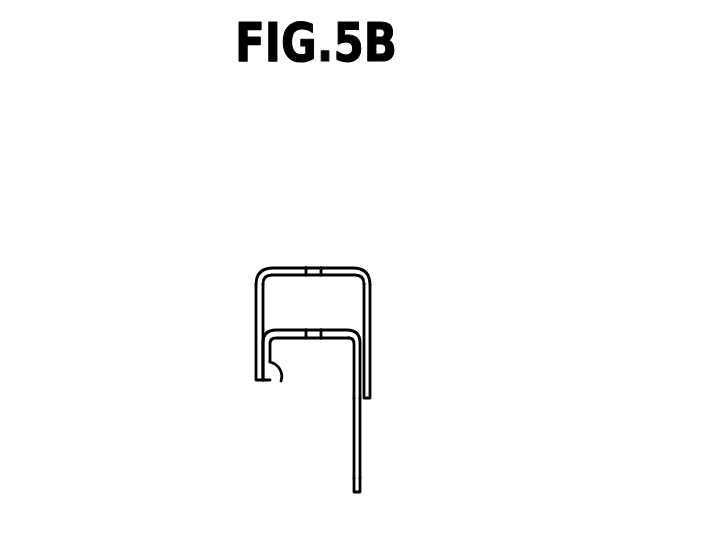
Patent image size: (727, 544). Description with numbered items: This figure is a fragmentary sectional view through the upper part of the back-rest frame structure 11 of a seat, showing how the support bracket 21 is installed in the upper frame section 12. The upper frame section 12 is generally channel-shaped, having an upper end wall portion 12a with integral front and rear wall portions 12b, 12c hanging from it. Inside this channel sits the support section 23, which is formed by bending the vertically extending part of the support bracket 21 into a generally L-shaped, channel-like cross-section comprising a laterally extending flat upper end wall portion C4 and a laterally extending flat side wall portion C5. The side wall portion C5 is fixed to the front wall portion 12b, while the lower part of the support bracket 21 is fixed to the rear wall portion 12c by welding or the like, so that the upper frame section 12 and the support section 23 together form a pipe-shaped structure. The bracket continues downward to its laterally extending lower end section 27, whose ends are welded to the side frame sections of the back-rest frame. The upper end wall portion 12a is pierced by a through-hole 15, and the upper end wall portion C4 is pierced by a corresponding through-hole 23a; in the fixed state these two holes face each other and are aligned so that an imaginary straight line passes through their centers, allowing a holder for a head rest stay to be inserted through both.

The back-rest frame structure 11 is at (263, 257).
The upper frame section 12 is at (332, 268).
The upper end wall portion 12a is at (297, 267).
The front wall portion 12b is at (262, 303).
The rear wall portion 12c is at (370, 303).
The through-hole 15 is at (312, 267).
The support section 23 is at (345, 330).
The through-hole 23a is at (309, 338).
The support bracket 21 is at (362, 431).
The lower end section 27 is at (362, 475).
The upper end wall portion C4 is at (328, 338).
The side wall portion C5 is at (281, 381).